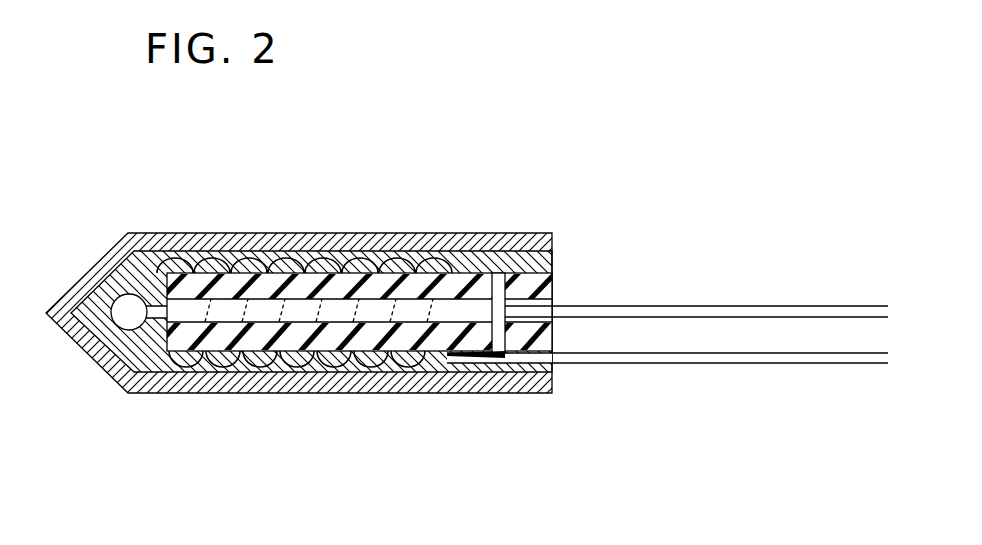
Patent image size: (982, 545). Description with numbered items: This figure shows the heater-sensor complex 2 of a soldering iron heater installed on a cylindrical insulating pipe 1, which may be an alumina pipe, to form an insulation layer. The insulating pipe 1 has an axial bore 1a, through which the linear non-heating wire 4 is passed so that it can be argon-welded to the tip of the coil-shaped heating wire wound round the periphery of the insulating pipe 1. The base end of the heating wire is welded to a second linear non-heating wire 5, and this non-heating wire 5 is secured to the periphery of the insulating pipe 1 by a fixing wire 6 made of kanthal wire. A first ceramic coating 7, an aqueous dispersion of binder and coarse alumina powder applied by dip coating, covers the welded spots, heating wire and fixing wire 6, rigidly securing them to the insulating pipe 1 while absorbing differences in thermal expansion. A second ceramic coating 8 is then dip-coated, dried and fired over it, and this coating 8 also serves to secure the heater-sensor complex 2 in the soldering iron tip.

The insulating pipe 1 is at (354, 327).
The axial bore 1a is at (438, 326).
The heater-sensor complex 2 is at (231, 336).
The linear non-heating wire 4 is at (739, 306).
The linear non-heating wire 5 is at (758, 364).
The fixing wire 6 is at (555, 287).
The first ceramic coating 7 is at (499, 225).
The second ceramic coating 8 is at (244, 233).